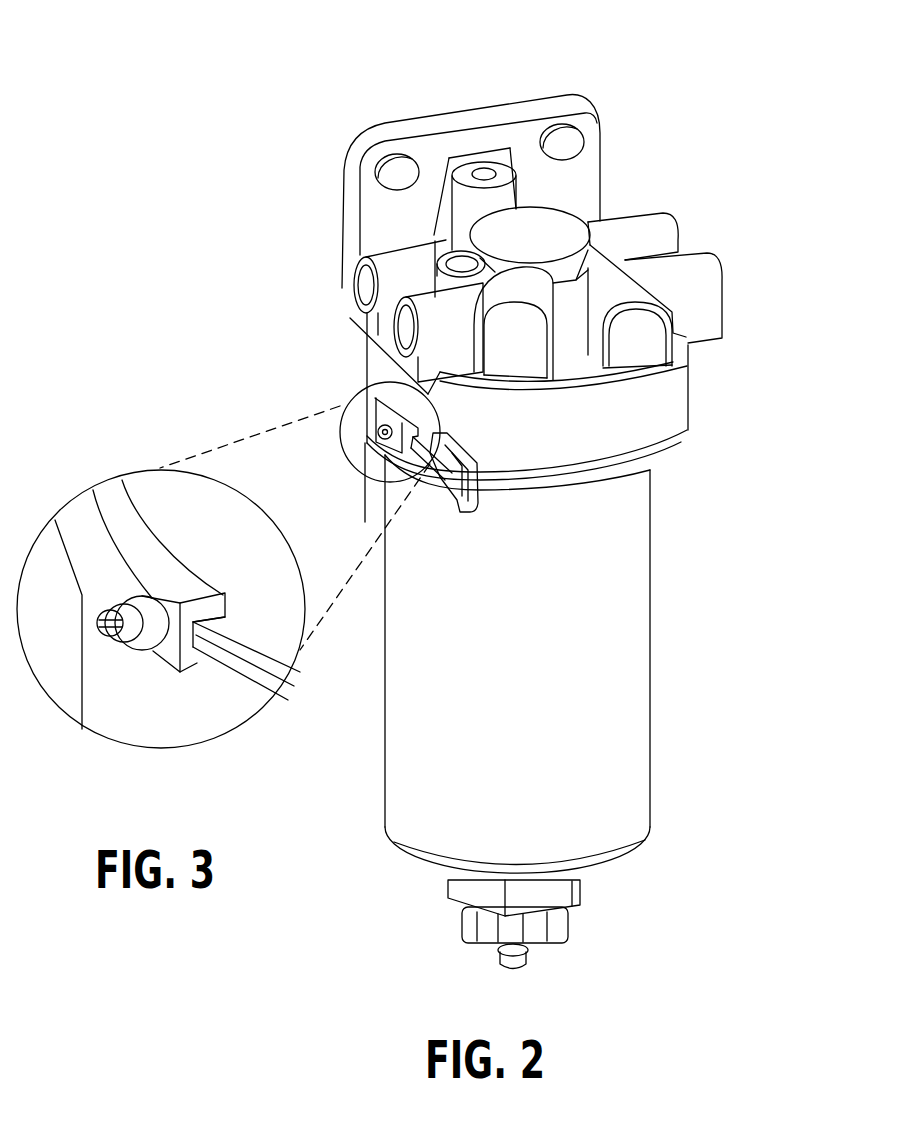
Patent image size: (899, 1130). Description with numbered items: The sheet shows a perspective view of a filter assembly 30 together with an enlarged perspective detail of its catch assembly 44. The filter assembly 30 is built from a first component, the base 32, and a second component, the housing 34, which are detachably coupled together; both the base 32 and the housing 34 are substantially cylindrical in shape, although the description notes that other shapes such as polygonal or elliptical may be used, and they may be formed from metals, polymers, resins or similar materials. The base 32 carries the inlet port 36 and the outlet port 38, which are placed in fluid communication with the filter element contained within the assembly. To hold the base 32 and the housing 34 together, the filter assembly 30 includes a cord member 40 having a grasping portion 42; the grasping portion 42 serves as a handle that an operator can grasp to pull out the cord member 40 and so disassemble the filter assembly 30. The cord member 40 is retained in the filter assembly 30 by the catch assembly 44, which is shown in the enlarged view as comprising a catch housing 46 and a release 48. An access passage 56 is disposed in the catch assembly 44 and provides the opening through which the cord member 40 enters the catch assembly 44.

In FIG. 2, the filter assembly 30 is at (317, 88).
In FIG. 2, the base 32 is at (512, 222).
In FIG. 3, the base 32 is at (155, 497).
In FIG. 2, the housing 34 is at (657, 678).
In FIG. 3, the housing 34 is at (135, 723).
In FIG. 2, the inlet port 36 is at (407, 330).
In FIG. 2, the outlet port 38 is at (368, 288).
In FIG. 2, the cord member 40 is at (427, 478).
In FIG. 3, the cord member 40 is at (230, 663).
In FIG. 2, the grasping portion 42 is at (452, 490).
In FIG. 2, the catch assembly 44 is at (352, 436).
In FIG. 3, the catch assembly 44 is at (218, 540).
In FIG. 3, the catch housing 46 is at (146, 598).
In FIG. 3, the release 48 is at (117, 641).
In FIG. 3, the access passage 56 is at (236, 615).